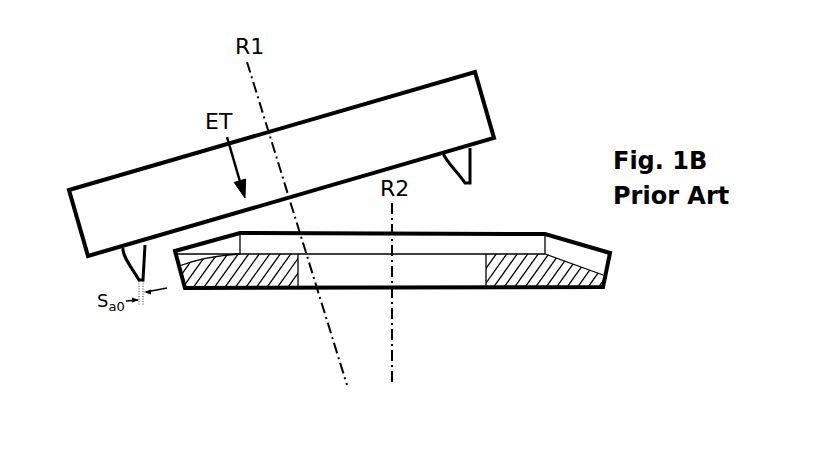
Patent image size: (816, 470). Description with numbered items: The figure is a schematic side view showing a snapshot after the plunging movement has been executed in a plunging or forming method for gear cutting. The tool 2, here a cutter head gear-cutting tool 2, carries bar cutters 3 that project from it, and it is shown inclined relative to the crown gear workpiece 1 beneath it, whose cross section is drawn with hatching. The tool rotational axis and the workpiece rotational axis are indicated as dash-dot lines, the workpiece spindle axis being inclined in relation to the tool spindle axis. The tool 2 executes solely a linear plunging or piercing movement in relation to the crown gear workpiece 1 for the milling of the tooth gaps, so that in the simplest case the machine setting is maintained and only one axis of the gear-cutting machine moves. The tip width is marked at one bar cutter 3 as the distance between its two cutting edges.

The crown gear workpiece 1 is at (604, 280).
The tool 2 is at (482, 83).
The bar cutter 3 is at (123, 261).